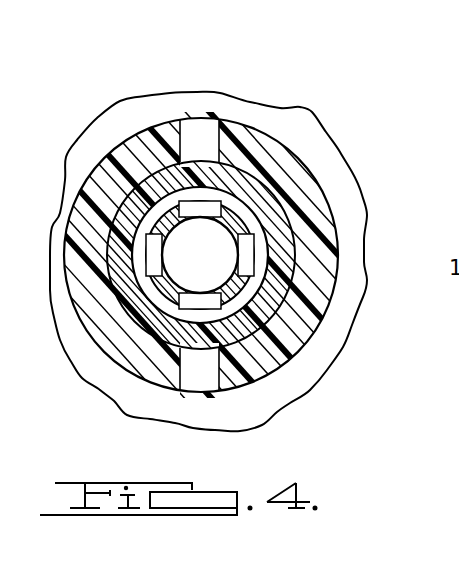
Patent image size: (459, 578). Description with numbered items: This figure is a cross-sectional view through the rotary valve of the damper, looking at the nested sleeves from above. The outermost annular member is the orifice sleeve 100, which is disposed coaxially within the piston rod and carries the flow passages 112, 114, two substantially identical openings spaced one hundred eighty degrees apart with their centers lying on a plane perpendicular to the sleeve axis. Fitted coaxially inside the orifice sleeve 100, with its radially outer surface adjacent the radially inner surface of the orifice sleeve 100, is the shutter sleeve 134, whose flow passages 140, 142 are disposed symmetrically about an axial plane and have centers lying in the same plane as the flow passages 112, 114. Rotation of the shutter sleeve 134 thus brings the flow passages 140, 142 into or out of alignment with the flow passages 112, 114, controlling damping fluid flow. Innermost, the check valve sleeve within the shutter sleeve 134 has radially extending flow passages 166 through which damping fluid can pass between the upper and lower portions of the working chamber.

The orifice sleeve 100 is at (283, 358).
The flow passage 112 is at (192, 388).
The flow passage 114 is at (203, 131).
The shutter sleeve 134 is at (276, 193).
The flow passage 140 is at (140, 207).
The flow passage 142 is at (270, 302).
The flow passages 166 is at (250, 248).